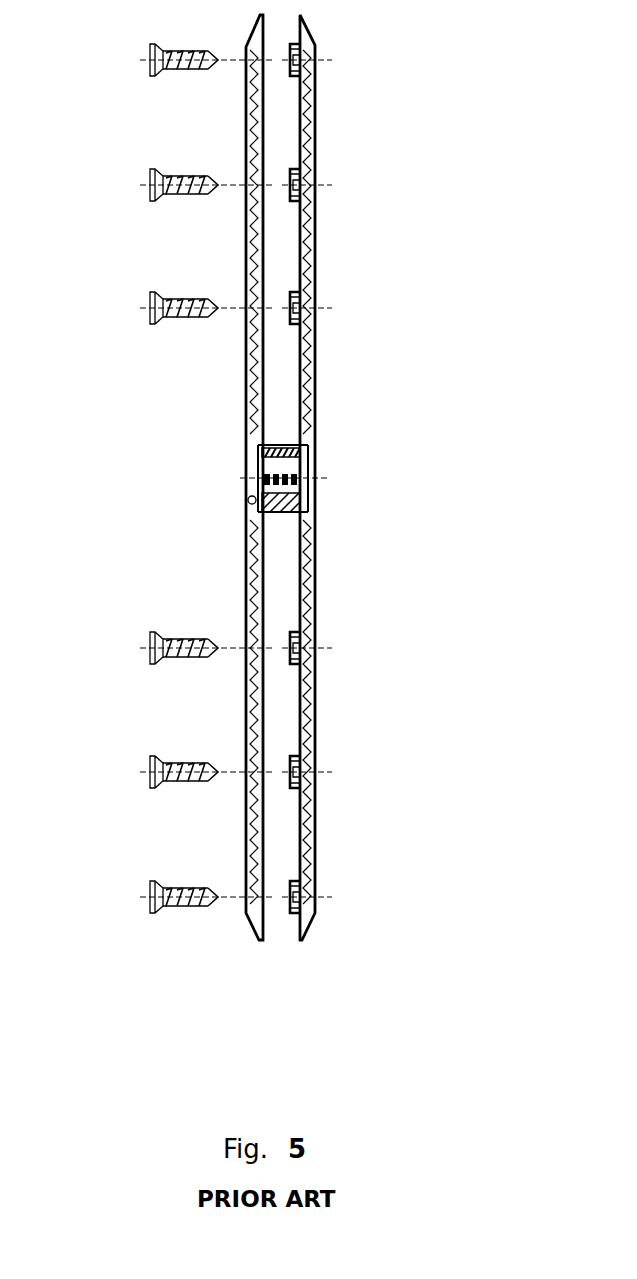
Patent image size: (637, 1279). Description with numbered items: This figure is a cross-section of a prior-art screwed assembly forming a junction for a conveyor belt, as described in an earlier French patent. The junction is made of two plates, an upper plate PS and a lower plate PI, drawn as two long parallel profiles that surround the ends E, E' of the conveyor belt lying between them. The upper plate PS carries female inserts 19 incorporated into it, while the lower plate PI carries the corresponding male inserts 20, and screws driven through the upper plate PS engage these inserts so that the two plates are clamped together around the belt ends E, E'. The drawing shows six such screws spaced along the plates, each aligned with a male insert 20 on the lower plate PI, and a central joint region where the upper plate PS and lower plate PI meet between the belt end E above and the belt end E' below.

The upper plate PS is at (250, 127).
The lower plate PI is at (312, 128).
The end of the conveyor belt E is at (171, 245).
The end of the conveyor belt E' is at (171, 711).
The female inserts 19 is at (142, 477).
The male inserts 20 is at (407, 477).